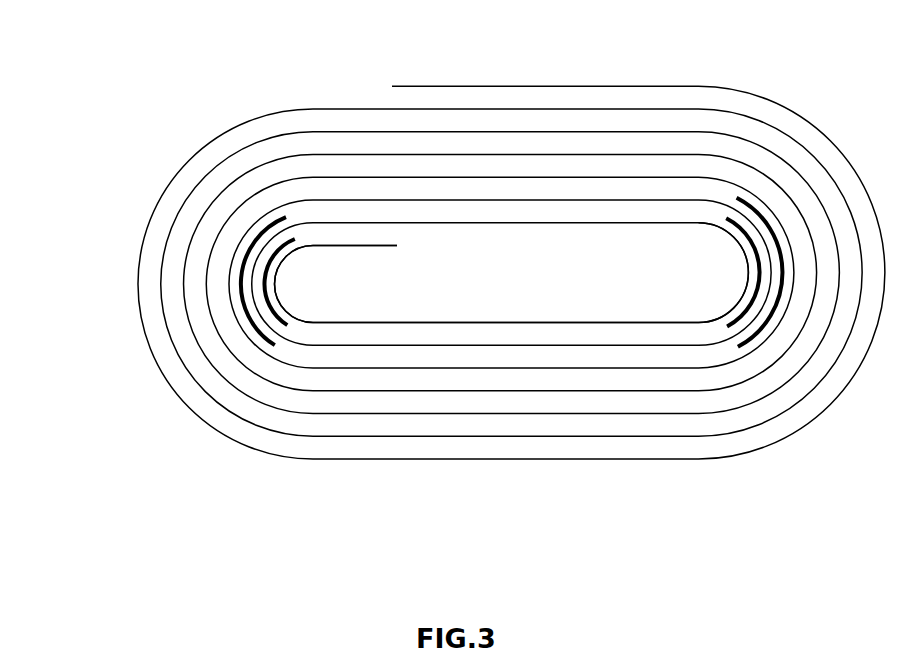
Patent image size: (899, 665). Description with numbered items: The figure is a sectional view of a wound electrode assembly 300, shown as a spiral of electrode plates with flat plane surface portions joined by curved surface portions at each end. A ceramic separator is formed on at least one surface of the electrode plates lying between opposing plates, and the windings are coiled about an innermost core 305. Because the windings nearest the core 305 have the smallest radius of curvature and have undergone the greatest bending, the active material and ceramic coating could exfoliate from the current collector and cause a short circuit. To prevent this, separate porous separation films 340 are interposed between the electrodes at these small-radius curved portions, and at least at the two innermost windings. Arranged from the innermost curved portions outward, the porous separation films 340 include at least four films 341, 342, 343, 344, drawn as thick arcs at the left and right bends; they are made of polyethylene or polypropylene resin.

The electrode assembly 300 is at (137, 283).
The core 305 is at (513, 267).
The porous separation films 340 is at (498, 398).
The porous separation film 341 is at (281, 323).
The porous separation film 342 is at (254, 330).
The porous separation film 343 is at (732, 330).
The porous separation film 344 is at (763, 361).